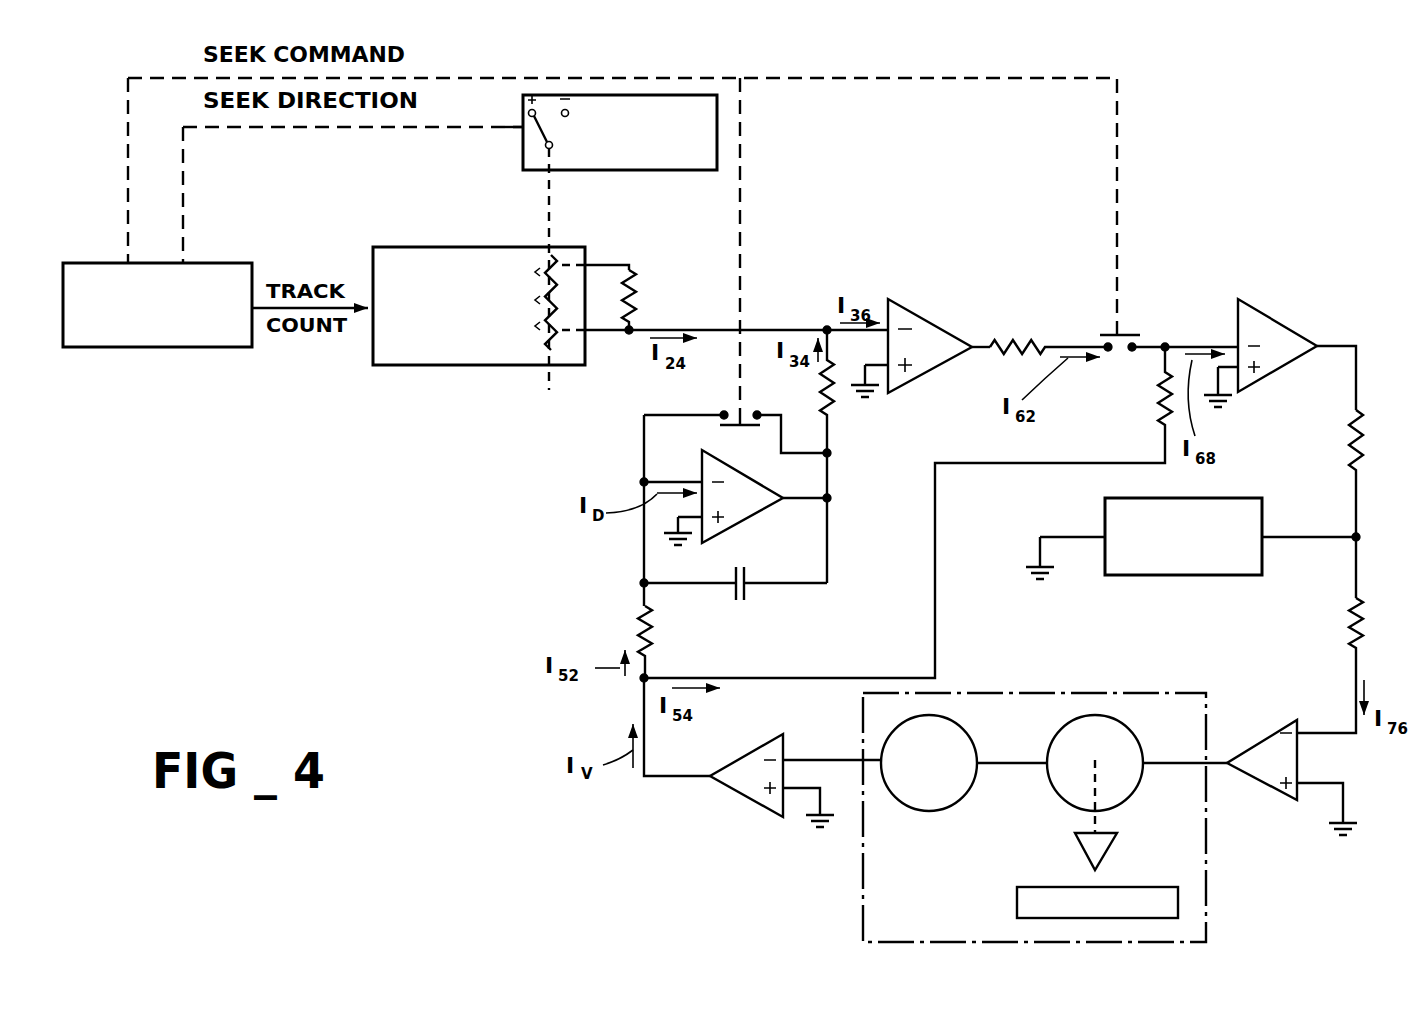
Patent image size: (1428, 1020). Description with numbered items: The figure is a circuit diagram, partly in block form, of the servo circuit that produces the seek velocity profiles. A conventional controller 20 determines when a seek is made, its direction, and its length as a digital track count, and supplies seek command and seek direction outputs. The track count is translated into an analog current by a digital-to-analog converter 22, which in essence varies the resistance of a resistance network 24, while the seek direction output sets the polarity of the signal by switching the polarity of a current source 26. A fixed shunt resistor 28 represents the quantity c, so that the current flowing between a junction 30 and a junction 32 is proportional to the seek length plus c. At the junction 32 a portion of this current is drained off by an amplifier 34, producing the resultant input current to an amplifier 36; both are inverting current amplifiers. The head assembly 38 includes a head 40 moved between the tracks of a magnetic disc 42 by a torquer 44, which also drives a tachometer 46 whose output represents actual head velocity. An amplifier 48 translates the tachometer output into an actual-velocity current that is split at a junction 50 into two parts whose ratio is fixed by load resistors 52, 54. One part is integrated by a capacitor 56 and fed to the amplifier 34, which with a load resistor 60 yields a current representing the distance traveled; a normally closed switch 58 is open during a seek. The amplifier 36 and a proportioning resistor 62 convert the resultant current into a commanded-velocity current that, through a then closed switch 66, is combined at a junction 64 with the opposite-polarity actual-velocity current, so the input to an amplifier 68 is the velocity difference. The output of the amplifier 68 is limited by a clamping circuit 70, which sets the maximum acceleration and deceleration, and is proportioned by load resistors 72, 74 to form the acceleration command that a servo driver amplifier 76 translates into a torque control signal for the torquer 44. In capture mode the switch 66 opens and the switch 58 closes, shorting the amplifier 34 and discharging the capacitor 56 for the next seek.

The controller 20 is at (165, 348).
The digital-to-analog converter 22 is at (447, 366).
The resistance network 24 is at (560, 283).
The current source 26 is at (679, 172).
The fixed shunt resistor 28 is at (641, 297).
The junction 30 is at (628, 334).
The junction 32 is at (825, 326).
The amplifier 34 is at (745, 506).
The amplifier 36 is at (930, 330).
The head assembly 38 is at (1208, 825).
The head 40 is at (1103, 851).
The magnetic disc 42 is at (1030, 900).
The torquer 44 is at (1073, 787).
The tachometer 46 is at (920, 806).
The amplifier 48 is at (742, 780).
The junction 50 is at (642, 680).
The load resistor 52 is at (637, 617).
The load resistor 54 is at (1160, 399).
The capacitor 56 is at (745, 599).
The switch 58 is at (732, 427).
The load resistor 60 is at (821, 398).
The proportioning resistor 62 is at (1015, 357).
The junction 64 is at (1167, 343).
The switch 66 is at (1128, 336).
The amplifier 68 is at (1285, 335).
The clamping circuit 70 is at (1228, 576).
The load resistor 72 is at (1362, 414).
The load resistor 74 is at (1365, 641).
The servo driver amplifier 76 is at (1268, 745).